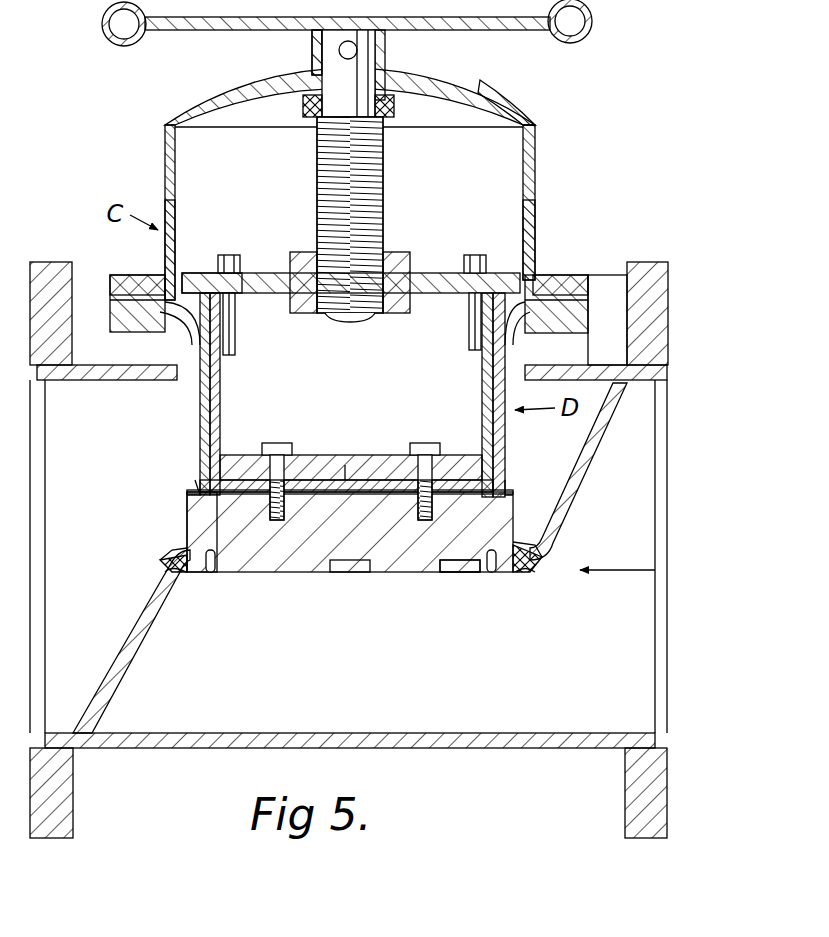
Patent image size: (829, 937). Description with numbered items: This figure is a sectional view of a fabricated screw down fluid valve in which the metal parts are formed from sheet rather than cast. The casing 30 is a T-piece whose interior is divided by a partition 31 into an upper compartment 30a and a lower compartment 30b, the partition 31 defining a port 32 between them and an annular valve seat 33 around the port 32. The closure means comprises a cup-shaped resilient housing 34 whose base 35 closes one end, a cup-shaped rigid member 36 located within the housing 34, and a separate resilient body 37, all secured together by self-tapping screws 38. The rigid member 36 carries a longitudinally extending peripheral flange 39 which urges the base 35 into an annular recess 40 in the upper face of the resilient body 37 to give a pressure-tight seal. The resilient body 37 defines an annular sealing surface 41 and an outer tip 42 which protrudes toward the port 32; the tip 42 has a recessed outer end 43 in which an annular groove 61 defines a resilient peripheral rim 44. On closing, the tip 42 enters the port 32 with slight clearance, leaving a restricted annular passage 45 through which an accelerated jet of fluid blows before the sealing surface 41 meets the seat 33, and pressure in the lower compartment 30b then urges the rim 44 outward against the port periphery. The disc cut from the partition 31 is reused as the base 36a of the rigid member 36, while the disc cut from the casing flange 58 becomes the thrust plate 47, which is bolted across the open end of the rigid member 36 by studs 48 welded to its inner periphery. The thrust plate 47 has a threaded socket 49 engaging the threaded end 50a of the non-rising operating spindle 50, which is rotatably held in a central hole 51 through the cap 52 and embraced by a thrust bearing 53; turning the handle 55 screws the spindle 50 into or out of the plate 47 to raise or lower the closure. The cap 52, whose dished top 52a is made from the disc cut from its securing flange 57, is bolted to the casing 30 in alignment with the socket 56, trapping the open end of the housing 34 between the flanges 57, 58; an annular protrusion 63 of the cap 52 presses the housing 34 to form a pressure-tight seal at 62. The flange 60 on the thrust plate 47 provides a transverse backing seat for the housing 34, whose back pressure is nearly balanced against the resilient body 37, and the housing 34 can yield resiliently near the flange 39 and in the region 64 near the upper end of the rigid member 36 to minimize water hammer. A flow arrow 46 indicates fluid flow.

The casing 30 is at (163, 363).
The upper compartment 30a is at (84, 509).
The lower compartment 30b is at (474, 705).
The partition 31 is at (130, 652).
The port 32 is at (356, 582).
The annular valve seat 33 is at (178, 572).
The resilient housing 34 is at (212, 428).
The base 35 is at (466, 575).
The rigid member 36 is at (200, 400).
The base of rigid member 36a is at (345, 466).
The resilient body 37 is at (187, 535).
The self-tapping screws 38 is at (225, 462).
The peripheral flange 39 is at (198, 497).
The annular recess 40 is at (195, 490).
The annular sealing surface 41 is at (170, 553).
The tip 42 is at (312, 574).
The recessed outer end 43 is at (462, 597).
The peripheral rim 44 is at (200, 574).
The restricted annular passage 45 is at (190, 577).
The outlet flow arrow 46 is at (620, 537).
The thrust plate 47 is at (500, 273).
The studs 48 is at (168, 205).
The threaded socket 49 is at (240, 273).
The operating spindle 50 is at (342, 82).
The threaded end 50a is at (390, 182).
The central hole 51 is at (305, 72).
The cap 52 is at (536, 146).
The top of cap 52a is at (528, 110).
The thrust bearing 53 is at (392, 108).
The handle 55 is at (585, 40).
The socket 56 is at (593, 347).
The securing flange 57 is at (150, 300).
The securing flange 58 is at (114, 322).
The flange 60 is at (410, 262).
The annular groove 61 is at (275, 575).
The pressure tight seal 62 is at (160, 323).
The annular protrusion 63 is at (163, 297).
The yielding region 64 is at (217, 265).